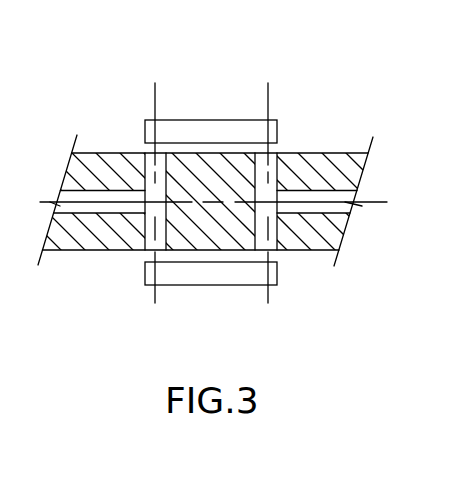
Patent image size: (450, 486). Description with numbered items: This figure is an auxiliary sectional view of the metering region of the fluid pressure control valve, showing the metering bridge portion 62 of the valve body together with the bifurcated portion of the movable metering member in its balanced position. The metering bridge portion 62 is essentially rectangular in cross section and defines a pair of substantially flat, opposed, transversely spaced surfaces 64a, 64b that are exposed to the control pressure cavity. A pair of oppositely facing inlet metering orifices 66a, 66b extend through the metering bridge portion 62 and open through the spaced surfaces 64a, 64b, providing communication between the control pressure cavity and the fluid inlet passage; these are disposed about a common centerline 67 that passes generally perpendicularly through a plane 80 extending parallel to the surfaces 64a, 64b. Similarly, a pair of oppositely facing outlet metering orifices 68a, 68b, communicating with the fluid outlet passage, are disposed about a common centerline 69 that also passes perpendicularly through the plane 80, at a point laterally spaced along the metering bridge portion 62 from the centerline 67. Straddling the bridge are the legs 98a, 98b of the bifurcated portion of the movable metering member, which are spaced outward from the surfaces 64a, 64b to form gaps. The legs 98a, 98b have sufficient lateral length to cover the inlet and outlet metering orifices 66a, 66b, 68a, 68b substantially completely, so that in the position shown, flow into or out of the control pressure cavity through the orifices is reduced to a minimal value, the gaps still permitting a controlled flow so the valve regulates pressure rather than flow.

The metering bridge portion 62 is at (345, 153).
The transversely spaced surface 64a is at (82, 251).
The transversely spaced surface 64b is at (92, 157).
The inlet metering orifice 66a is at (270, 250).
The inlet metering orifice 66b is at (278, 120).
The outlet metering orifice 68a is at (147, 250).
The outlet metering orifice 68b is at (147, 157).
The common centerline 69 is at (157, 86).
The common centerline 67 is at (270, 87).
The leg 98a is at (247, 286).
The leg 98b is at (223, 120).
The plane 80 is at (379, 202).